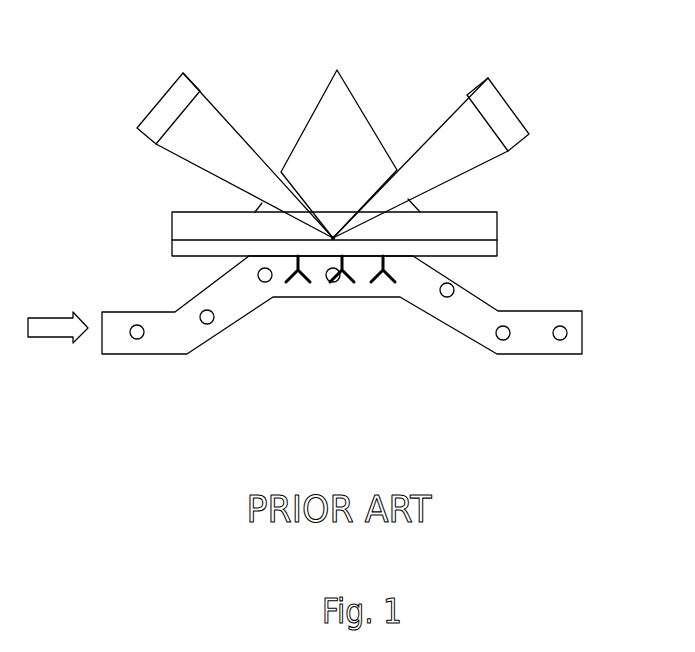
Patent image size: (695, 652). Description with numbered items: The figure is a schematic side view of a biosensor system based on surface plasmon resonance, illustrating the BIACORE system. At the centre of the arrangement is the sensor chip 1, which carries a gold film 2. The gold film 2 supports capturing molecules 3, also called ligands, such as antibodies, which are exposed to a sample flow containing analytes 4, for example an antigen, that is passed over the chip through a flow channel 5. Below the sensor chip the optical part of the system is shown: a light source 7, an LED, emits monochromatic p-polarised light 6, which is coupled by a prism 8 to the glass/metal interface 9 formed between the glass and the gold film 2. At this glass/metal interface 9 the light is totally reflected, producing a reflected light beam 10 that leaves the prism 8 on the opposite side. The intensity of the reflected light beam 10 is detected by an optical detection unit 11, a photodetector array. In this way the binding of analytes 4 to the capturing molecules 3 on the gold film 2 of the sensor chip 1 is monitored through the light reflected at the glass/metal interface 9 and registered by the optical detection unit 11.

The sensor chip 1 is at (160, 224).
The gold film 2 is at (172, 258).
The capturing molecules 3 is at (302, 282).
The analytes 4 is at (139, 340).
The flow channel 5 is at (112, 338).
The monochromatic p-polarised light 6 is at (225, 133).
The light source 7 is at (157, 92).
The prism 8 is at (333, 140).
The glass/metal interface 9 is at (333, 238).
The reflected light beam 10 is at (440, 150).
The optical detection unit 11 is at (503, 115).